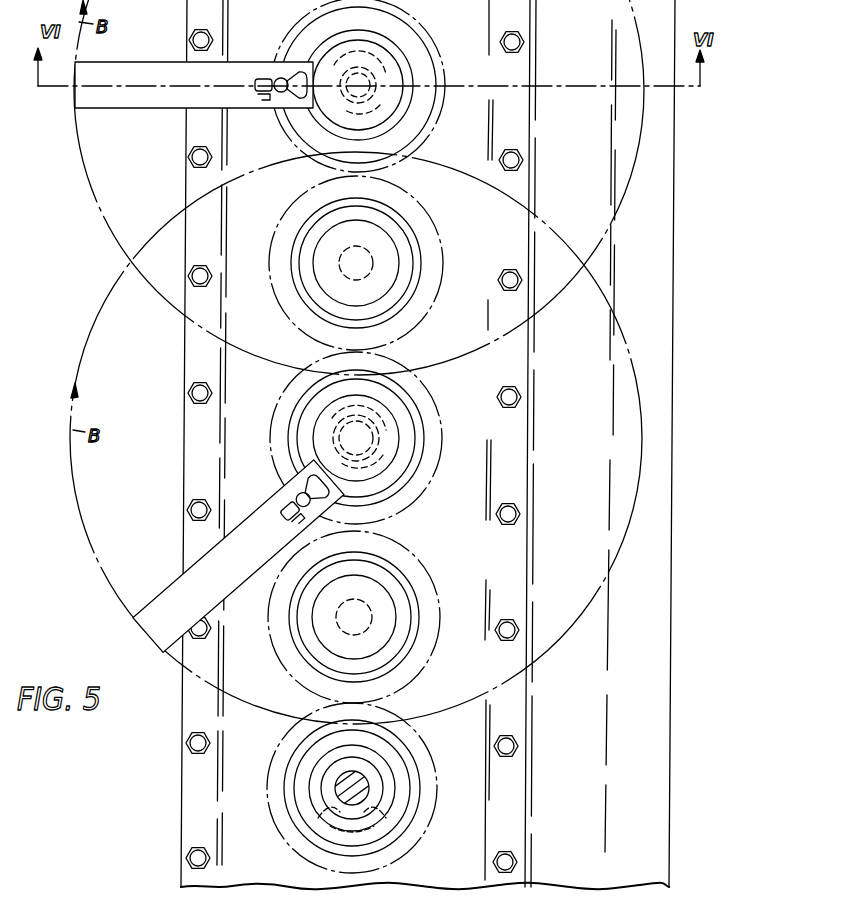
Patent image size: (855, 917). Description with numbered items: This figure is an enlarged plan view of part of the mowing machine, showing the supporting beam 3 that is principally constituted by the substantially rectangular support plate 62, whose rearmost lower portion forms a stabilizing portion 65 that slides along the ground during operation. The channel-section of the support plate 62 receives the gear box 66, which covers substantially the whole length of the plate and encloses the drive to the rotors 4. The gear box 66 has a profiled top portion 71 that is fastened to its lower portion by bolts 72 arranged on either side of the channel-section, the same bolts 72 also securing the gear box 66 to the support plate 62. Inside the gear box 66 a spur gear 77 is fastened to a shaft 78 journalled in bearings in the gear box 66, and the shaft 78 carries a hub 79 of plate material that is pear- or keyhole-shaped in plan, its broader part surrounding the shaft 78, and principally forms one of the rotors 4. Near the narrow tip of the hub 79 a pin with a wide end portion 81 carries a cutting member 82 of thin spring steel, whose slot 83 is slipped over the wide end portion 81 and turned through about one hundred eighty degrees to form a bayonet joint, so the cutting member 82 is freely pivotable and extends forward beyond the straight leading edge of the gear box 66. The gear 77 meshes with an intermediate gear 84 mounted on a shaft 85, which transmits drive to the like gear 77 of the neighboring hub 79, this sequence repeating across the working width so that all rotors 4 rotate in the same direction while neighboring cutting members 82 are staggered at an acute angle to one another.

The supporting beam 3 is at (676, 184).
The rotor 4 is at (86, 165).
The support plate 62 is at (666, 856).
The stabilizing portion 65 is at (645, 495).
The gear box 66 is at (500, 470).
The top portion 71 is at (236, 412).
The bolts 72 is at (518, 159).
The spur gear 77 is at (436, 107).
The shaft 78 is at (376, 81).
The hub 79 is at (388, 58).
The wide end portion 81 is at (288, 63).
The cutting member 82 is at (136, 69).
The slot 83 is at (274, 100).
The intermediate gear 84 is at (292, 214).
The shaft 85 is at (342, 268).